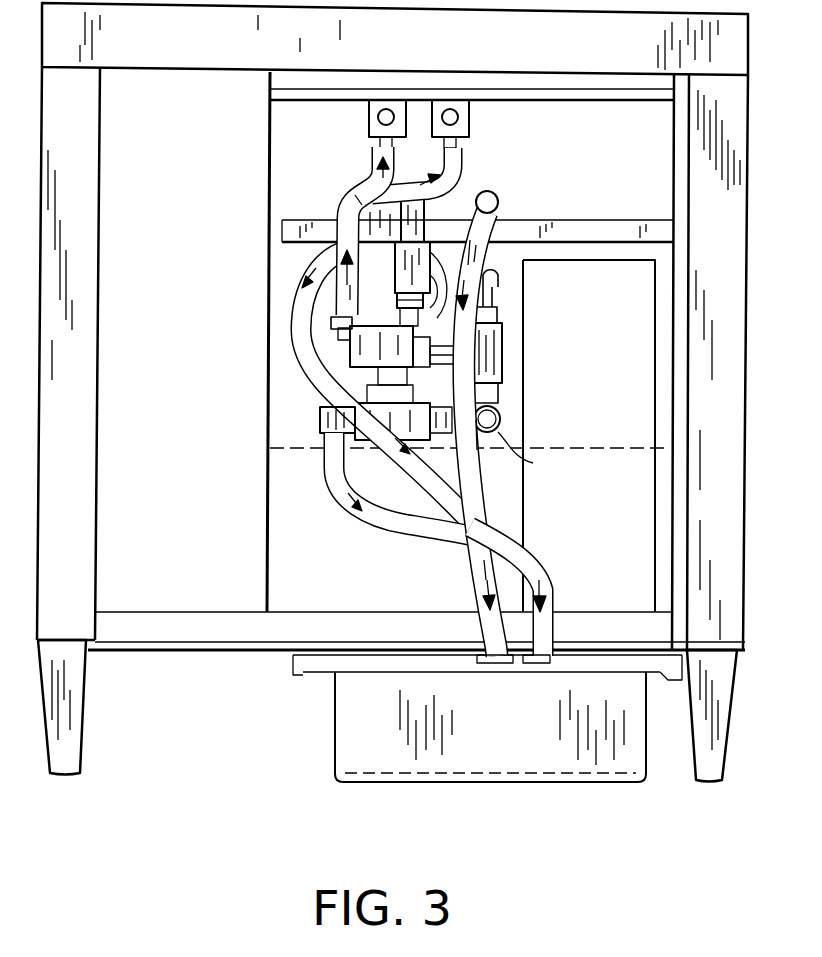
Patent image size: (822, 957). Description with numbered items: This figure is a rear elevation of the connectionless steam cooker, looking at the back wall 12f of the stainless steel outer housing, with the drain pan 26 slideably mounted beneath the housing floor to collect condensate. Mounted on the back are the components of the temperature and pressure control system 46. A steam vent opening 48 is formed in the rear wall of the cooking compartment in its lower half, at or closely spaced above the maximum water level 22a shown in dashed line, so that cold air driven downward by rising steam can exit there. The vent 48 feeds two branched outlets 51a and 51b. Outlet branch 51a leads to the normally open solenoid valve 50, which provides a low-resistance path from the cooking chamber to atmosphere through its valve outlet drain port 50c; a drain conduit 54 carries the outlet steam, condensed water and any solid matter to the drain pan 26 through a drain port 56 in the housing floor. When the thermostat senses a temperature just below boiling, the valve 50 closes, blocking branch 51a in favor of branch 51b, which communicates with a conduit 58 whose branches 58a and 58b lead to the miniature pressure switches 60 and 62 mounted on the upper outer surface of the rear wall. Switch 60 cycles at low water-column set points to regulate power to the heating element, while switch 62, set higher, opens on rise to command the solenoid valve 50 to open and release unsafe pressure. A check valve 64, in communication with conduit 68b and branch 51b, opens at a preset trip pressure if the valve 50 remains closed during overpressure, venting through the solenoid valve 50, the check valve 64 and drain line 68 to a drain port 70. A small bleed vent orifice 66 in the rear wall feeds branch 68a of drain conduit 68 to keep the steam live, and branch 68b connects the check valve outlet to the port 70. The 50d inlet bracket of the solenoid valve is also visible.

The back wall 12f is at (729, 370).
The maximum water level 22a is at (284, 438).
The drain pan 26 is at (360, 718).
The temperature and pressure control system 46 is at (300, 419).
The steam vent opening 48 is at (505, 413).
The solenoid valve 50 is at (326, 345).
The valve outlet drain port 50c is at (324, 412).
The valve inlet bracket 50d is at (330, 322).
The outlet branch 51a is at (536, 443).
The outlet branch 51b is at (502, 366).
The drain conduit 54 is at (528, 572).
The drain port 56 is at (543, 668).
The conduit 58 is at (343, 200).
The conduit branch 58a is at (373, 155).
The conduit branch 58b is at (462, 152).
The miniature pressure switch 60 is at (369, 110).
The miniature pressure microswitch 62 is at (470, 108).
The check valve 64 is at (437, 250).
The bleed vent orifice 66 is at (499, 202).
The drain conduit 68 is at (478, 575).
The conduit branch 68a is at (492, 258).
The conduit branch 68b is at (302, 264).
The drain port 70 is at (210, 537).